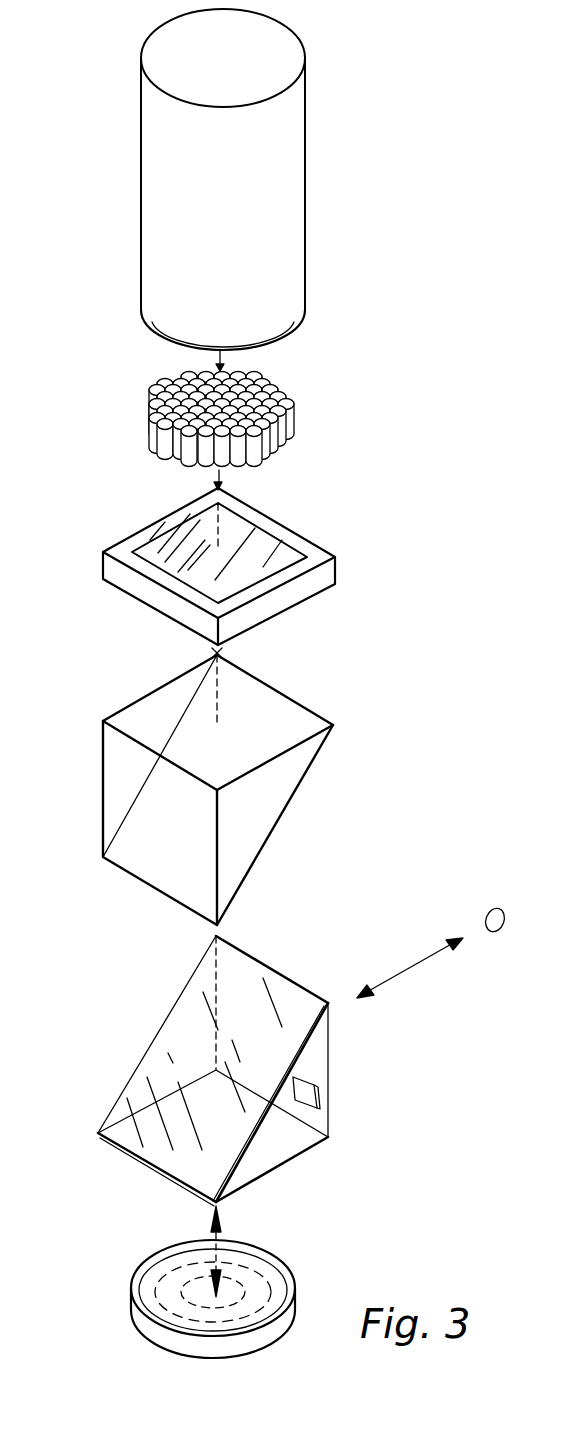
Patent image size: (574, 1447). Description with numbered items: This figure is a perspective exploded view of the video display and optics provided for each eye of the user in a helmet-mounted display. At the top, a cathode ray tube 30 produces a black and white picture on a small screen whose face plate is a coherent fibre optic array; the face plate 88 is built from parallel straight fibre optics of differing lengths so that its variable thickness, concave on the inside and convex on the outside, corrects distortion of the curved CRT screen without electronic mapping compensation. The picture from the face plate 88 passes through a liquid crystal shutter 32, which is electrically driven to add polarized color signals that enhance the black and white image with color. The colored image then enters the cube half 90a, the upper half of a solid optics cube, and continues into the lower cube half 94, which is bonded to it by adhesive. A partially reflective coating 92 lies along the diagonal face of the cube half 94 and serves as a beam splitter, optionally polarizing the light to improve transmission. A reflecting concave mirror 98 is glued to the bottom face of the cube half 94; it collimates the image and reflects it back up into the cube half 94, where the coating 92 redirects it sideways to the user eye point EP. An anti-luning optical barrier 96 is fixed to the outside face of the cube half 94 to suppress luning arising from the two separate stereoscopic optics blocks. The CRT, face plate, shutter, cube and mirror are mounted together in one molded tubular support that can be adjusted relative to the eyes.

The cathode ray tube 30 is at (135, 18).
The fibre optic face plate 88 is at (287, 393).
The liquid crystal shutter 32 is at (290, 524).
The cube half 90a is at (277, 777).
The partially reflective coating 92 is at (243, 980).
The cube half 94 is at (317, 1047).
The anti-luning optical barrier 96 is at (303, 1093).
The reflecting concave mirror 98 is at (267, 1252).
The eye point EP is at (432, 952).